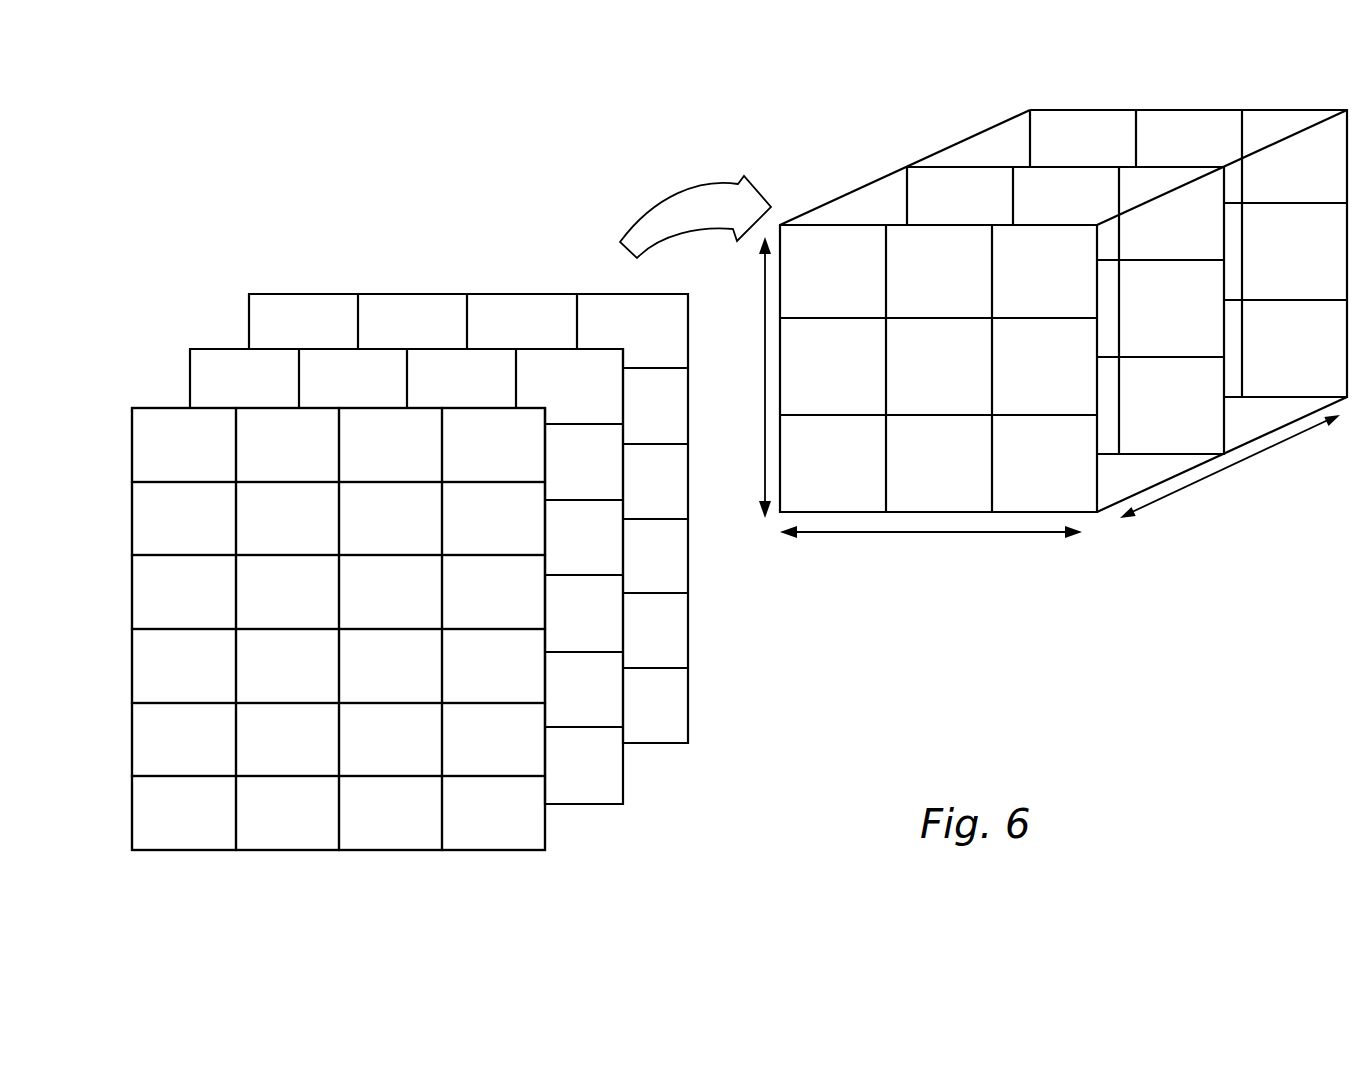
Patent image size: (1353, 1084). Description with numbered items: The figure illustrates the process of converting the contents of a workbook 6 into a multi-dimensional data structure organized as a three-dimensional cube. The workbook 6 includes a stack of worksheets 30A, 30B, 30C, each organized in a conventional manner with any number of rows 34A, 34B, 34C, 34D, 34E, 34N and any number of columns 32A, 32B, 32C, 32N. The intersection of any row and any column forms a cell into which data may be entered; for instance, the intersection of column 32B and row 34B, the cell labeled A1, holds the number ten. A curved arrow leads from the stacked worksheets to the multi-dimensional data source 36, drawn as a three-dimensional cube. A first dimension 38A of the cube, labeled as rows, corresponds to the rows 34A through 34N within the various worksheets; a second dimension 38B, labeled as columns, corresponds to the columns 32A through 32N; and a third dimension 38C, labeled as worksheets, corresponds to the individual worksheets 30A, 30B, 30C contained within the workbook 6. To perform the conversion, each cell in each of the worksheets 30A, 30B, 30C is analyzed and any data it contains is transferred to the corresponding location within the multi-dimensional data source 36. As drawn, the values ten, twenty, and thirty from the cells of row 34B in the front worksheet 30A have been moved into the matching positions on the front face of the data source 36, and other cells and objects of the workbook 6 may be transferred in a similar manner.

The workbook 6 is at (128, 878).
The worksheet 30A is at (152, 391).
The worksheet 30B is at (217, 332).
The worksheet 30C is at (300, 278).
The column 32A is at (183, 852).
The column 32B is at (287, 852).
The column 32C is at (392, 852).
The column 32N is at (497, 852).
The row 34A is at (132, 447).
The row 34B is at (132, 521).
The row 34C is at (132, 595).
The row 34D is at (132, 669).
The row 34E is at (132, 743).
The row 34N is at (132, 816).
The multi-dimensional data source 36 is at (1238, 92).
The first dimension 38A is at (764, 460).
The second dimension 38B is at (932, 563).
The third dimension 38C is at (1232, 502).